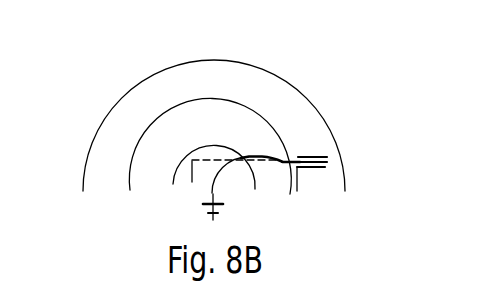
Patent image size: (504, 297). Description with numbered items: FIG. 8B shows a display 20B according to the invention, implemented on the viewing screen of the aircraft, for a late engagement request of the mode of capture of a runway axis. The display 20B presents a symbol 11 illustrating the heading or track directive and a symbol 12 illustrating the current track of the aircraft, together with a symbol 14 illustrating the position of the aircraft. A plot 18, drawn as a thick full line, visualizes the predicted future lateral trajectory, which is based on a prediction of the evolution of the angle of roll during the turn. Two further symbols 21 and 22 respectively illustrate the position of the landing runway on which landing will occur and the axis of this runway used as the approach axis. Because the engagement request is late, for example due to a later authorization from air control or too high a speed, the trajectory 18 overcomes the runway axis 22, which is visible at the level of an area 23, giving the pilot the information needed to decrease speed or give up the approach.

The symbol 11 is at (200, 50).
The symbol 12 is at (216, 49).
The symbol 14 is at (202, 211).
The plot 18 is at (283, 168).
The display 20B is at (318, 77).
The symbol 21 is at (314, 168).
The symbol 22 is at (190, 181).
The area 23 is at (263, 147).